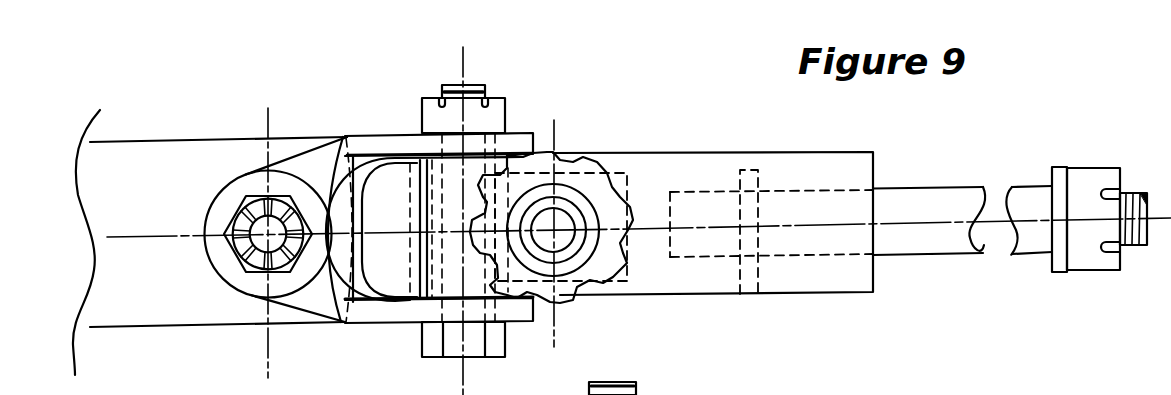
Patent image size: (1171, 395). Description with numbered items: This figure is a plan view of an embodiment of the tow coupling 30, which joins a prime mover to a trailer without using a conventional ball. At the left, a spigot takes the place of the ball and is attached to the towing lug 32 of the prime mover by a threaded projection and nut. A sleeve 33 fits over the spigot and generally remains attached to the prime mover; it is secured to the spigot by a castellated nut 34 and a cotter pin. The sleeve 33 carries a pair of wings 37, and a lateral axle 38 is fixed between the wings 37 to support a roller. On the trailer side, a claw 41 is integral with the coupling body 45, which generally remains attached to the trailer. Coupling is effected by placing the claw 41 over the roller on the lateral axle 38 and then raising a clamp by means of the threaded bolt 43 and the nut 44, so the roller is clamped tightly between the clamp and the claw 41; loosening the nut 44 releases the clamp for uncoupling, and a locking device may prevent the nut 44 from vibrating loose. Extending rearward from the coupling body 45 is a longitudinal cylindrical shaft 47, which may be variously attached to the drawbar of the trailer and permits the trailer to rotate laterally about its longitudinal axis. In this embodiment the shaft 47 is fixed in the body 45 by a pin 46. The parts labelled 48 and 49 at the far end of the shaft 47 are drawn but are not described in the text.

The tow coupling 30 is at (653, 107).
The towing lug 32 is at (152, 190).
The sleeve 33 is at (230, 267).
The castellated nut 34 is at (242, 200).
The wings 37 is at (380, 312).
The lateral axle 38 is at (457, 285).
The claw 41 is at (390, 275).
The threaded bolt 43 is at (568, 220).
The nut 44 is at (620, 262).
The coupling body 45 is at (697, 285).
The pin 46 is at (760, 292).
The longitudinal cylindrical shaft 47 is at (938, 245).
The end cap 48 is at (1102, 176).
The collar 49 is at (1060, 178).